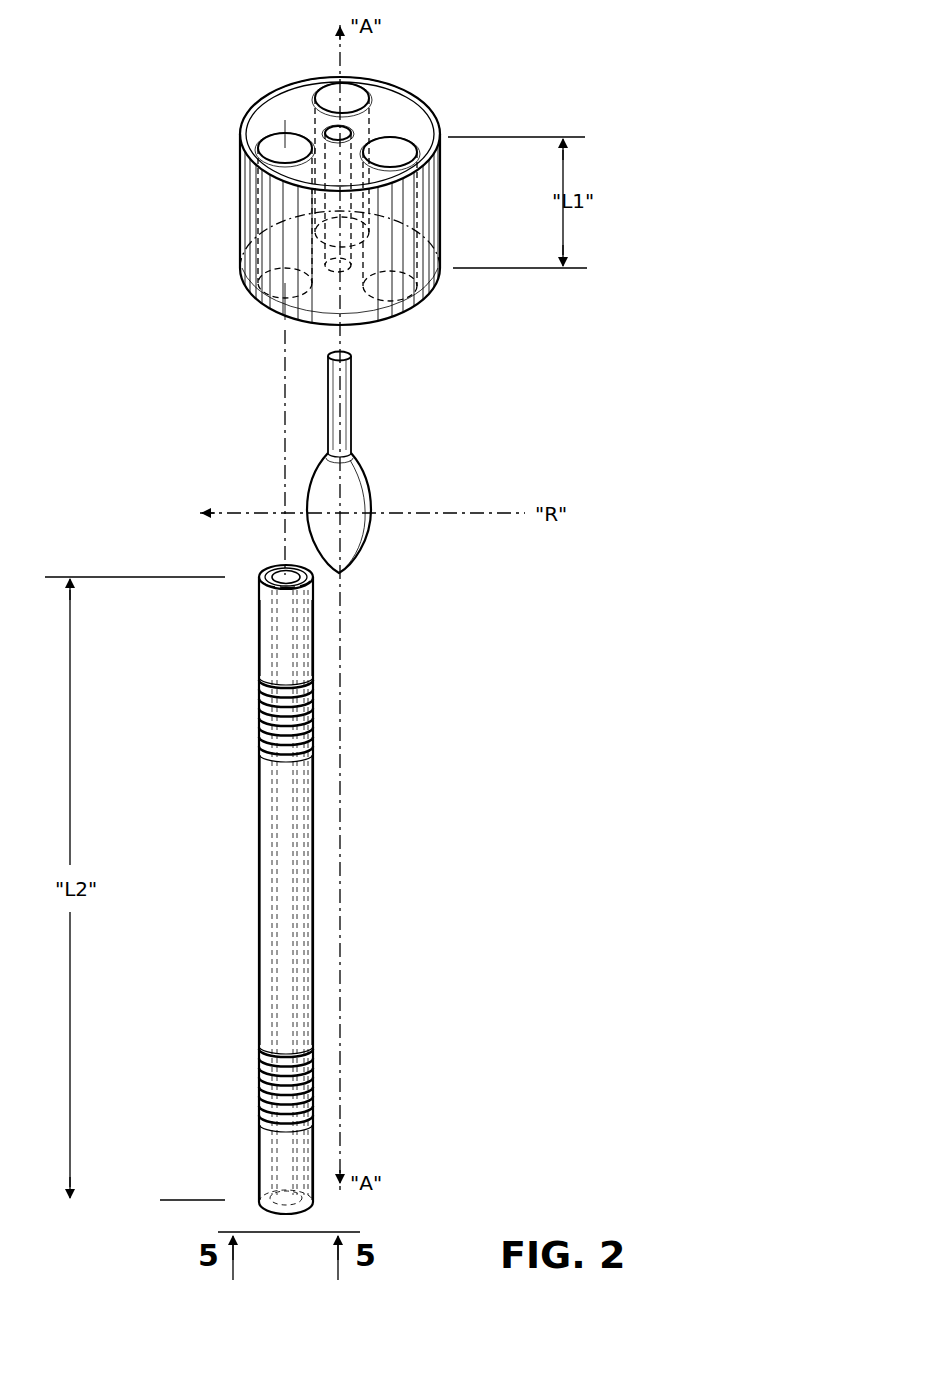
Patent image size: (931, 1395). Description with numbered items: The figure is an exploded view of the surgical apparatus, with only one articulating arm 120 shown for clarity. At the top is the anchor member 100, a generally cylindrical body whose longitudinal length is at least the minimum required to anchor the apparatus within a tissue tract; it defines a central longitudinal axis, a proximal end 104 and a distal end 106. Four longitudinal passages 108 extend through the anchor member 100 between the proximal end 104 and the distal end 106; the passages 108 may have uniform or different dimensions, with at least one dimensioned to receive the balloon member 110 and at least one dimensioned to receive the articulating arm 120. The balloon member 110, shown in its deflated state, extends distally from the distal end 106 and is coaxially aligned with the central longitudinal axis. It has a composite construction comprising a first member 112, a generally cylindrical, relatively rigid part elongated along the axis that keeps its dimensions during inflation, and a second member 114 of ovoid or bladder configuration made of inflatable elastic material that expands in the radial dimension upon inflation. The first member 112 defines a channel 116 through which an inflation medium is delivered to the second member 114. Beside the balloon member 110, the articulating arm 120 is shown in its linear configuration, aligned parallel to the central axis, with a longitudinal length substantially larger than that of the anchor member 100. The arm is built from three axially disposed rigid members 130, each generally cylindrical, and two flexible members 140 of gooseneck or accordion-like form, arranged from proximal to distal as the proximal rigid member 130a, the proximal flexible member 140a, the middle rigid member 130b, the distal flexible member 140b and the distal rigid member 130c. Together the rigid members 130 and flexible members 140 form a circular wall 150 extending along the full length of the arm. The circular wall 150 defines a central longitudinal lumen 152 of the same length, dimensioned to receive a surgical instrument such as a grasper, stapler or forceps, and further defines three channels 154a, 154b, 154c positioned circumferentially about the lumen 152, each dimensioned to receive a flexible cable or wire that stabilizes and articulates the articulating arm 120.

The anchor member 100 is at (215, 198).
The proximal end 104 is at (410, 130).
The distal end 106 is at (442, 268).
The longitudinal passage 108 is at (392, 152).
The balloon member 110 is at (396, 463).
The first member 112 is at (345, 397).
The second member 114 is at (350, 522).
The channel 116 is at (343, 427).
The articulating arm 120 is at (172, 742).
The rigid member 130 is at (379, 907).
The proximal rigid member 130a is at (315, 627).
The middle rigid member 130b is at (313, 868).
The distal rigid member 130c is at (350, 1111).
The flexible member 140 is at (215, 902).
The proximal flexible member 140a is at (256, 717).
The distal flexible member 140b is at (257, 1070).
The circular wall 150 is at (270, 575).
The longitudinal lumen 152 is at (282, 568).
The channel 154a is at (268, 584).
The channel 154b is at (291, 566).
The channel 154c is at (313, 581).